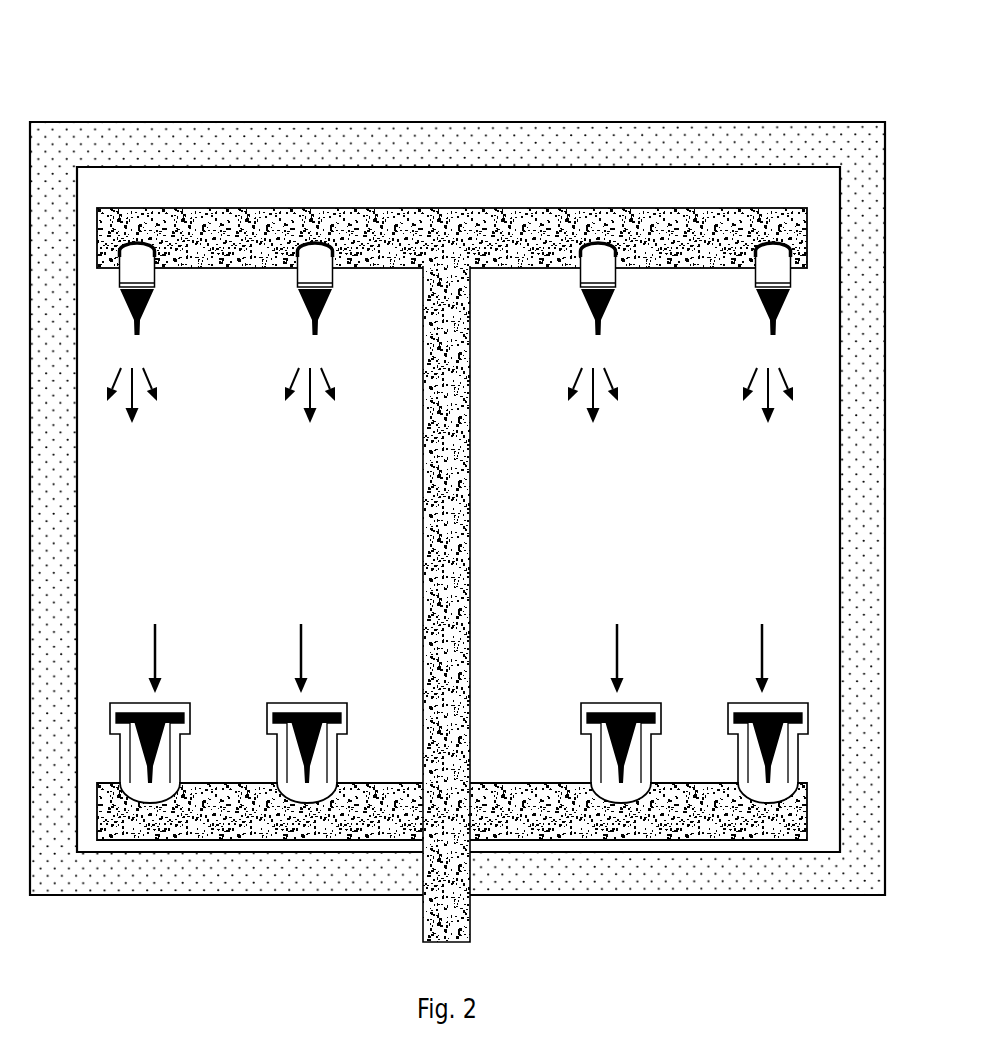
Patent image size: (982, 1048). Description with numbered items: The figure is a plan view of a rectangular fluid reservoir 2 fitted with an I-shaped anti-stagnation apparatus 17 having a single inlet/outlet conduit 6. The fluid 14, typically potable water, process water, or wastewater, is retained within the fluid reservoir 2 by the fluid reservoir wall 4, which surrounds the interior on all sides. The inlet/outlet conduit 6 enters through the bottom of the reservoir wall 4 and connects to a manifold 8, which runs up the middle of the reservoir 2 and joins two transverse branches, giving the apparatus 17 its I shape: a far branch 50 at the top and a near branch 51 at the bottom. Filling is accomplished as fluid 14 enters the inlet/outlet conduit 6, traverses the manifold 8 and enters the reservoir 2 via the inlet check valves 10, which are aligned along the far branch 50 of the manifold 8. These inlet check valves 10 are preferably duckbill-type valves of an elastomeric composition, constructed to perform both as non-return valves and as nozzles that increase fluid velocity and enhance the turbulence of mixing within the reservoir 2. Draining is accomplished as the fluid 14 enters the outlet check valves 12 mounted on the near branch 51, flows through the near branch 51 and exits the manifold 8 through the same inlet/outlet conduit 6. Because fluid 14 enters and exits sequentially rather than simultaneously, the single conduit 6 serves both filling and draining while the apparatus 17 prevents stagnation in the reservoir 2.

The fluid reservoir 2 is at (182, 90).
The fluid reservoir wall 4 is at (43, 784).
The inlet/outlet conduit 6 is at (437, 940).
The manifold 8 is at (436, 705).
The inlet check valves 10 is at (310, 303).
The outlet check valves 12 is at (293, 717).
The fluid 14 is at (550, 535).
The I-shaped anti-stagnation apparatus 17 is at (499, 764).
The far branch 50 is at (374, 249).
The near branch 51 is at (374, 825).